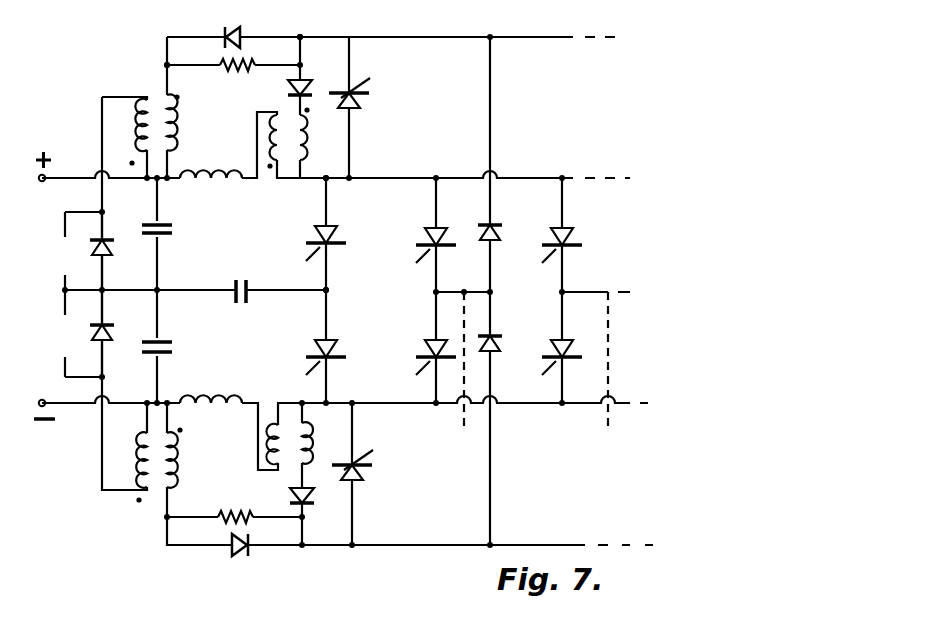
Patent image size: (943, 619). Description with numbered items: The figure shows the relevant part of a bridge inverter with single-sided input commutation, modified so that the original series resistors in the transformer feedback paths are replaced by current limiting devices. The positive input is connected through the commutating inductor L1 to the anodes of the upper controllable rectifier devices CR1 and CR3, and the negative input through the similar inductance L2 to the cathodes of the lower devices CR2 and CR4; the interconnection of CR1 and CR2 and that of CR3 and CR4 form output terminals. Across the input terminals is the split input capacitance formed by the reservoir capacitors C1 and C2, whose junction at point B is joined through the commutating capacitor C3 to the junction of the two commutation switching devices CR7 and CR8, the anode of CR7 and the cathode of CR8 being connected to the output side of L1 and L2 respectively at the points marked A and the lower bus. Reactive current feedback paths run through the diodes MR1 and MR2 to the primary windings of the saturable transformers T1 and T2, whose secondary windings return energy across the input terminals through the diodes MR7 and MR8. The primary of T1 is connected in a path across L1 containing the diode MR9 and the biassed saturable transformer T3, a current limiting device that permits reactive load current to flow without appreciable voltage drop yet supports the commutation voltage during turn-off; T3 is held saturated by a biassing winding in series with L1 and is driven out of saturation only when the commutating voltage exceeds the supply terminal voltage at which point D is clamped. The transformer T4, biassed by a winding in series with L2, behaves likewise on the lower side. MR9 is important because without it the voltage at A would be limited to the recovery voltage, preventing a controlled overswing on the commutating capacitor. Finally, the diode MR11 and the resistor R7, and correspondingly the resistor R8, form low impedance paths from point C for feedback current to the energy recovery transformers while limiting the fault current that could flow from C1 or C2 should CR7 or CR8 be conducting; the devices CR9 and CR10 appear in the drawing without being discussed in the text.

The saturable transformer T1 is at (166, 122).
The saturable transformer T2 is at (169, 459).
The biassed saturable transformer T3 is at (298, 137).
The biassed saturable transformer T4 is at (301, 443).
The commutating inductor L1 is at (211, 163).
The commutating inductor L2 is at (211, 389).
The reservoir capacitor C1 is at (181, 214).
The reservoir capacitor C2 is at (181, 331).
The commutating capacitor C3 is at (252, 262).
The resistor R7 is at (247, 74).
The resistor R8 is at (251, 498).
The diode MR1 is at (518, 224).
The diode MR2 is at (506, 346).
The diode MR7 is at (112, 247).
The diode MR8 is at (125, 323).
The diode MR9 is at (324, 72).
The diode MR11 is at (251, 18).
The controllable rectifier device CR1 is at (416, 244).
The controllable rectifier device CR2 is at (416, 357).
The controllable rectifier device CR3 is at (576, 240).
The controllable rectifier device CR4 is at (586, 337).
The controllable rectifier CR7 is at (346, 242).
The controllable rectifier CR8 is at (346, 356).
The controlled rectifier CR9 is at (360, 100).
The controlled rectifier CR10 is at (363, 472).
The point A is at (316, 189).
The circuit node B is at (338, 290).
The circuit node C is at (171, 39).
The point D is at (314, 27).